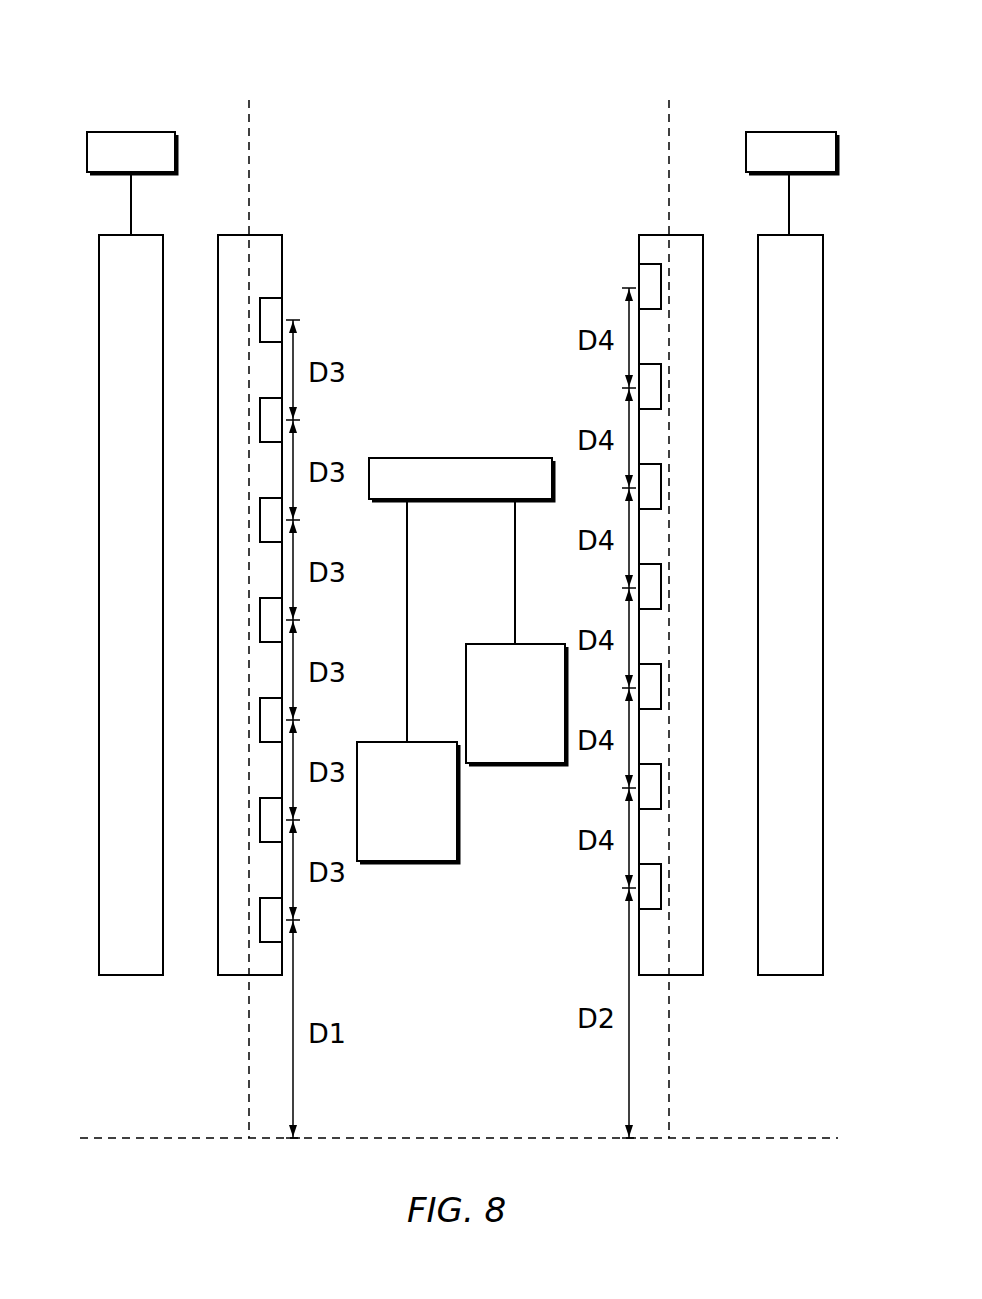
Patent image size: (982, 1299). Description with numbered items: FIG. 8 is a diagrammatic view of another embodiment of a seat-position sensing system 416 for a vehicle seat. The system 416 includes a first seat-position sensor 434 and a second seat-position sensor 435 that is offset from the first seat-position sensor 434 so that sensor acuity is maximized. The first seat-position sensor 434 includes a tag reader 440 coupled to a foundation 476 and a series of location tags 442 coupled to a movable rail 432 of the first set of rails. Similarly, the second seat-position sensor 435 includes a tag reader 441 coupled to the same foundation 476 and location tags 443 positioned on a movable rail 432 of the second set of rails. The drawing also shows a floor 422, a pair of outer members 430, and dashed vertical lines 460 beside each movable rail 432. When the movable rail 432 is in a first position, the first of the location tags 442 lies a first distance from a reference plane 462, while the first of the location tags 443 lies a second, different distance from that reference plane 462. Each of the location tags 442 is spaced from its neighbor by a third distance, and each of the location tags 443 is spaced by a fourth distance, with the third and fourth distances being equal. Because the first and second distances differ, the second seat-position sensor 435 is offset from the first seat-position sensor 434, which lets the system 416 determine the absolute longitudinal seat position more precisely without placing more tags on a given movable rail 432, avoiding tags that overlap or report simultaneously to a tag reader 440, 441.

The seat-position sensing system 416 is at (105, 60).
The floor 422 is at (148, 131).
The guide rail / pillar 430 is at (99, 437).
The movable rail 432 is at (282, 250).
The first seat-position sensor 434 is at (370, 348).
The second seat-position sensor 435 is at (551, 328).
The tag reader 440 is at (388, 742).
The tag reader 441 is at (492, 644).
The location tags 442 is at (260, 315).
The location tags 443 is at (661, 286).
The reference line 460 is at (252, 165).
The reference plane 462 is at (474, 1137).
The foundation 476 is at (430, 458).